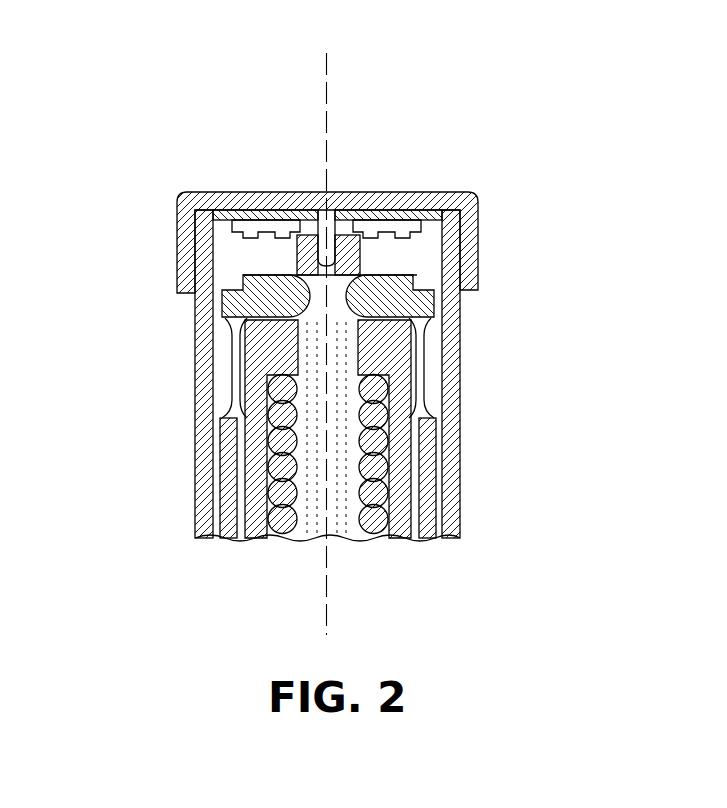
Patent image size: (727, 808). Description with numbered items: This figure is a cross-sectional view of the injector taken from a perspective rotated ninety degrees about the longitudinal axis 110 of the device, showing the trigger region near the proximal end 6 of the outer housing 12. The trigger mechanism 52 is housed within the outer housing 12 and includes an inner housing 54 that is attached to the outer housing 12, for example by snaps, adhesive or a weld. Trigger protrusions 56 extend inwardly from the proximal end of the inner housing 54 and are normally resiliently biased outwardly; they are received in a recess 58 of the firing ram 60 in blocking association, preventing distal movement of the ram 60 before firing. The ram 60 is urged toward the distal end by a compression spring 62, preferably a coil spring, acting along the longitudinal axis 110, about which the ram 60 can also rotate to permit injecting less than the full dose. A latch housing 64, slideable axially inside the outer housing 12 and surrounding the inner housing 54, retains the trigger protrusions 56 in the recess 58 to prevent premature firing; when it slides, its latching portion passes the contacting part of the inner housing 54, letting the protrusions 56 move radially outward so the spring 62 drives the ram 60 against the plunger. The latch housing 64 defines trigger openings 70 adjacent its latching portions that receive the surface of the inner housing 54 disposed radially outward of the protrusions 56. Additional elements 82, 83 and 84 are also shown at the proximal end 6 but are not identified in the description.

The proximal end 6 is at (155, 352).
The outer housing 12 is at (450, 432).
The trigger mechanism 52 is at (257, 262).
The inner housing 54 is at (403, 388).
The trigger protrusions 56 is at (290, 298).
The recess 58 is at (403, 352).
The firing ram 60 is at (348, 471).
The compression spring 62 is at (283, 520).
The latch housing 64 is at (432, 307).
The trigger openings 70 is at (222, 343).
The cap 82 is at (374, 192).
The stem 83 is at (320, 226).
The insert plate 84 is at (362, 252).
The longitudinal axis 110 is at (327, 100).